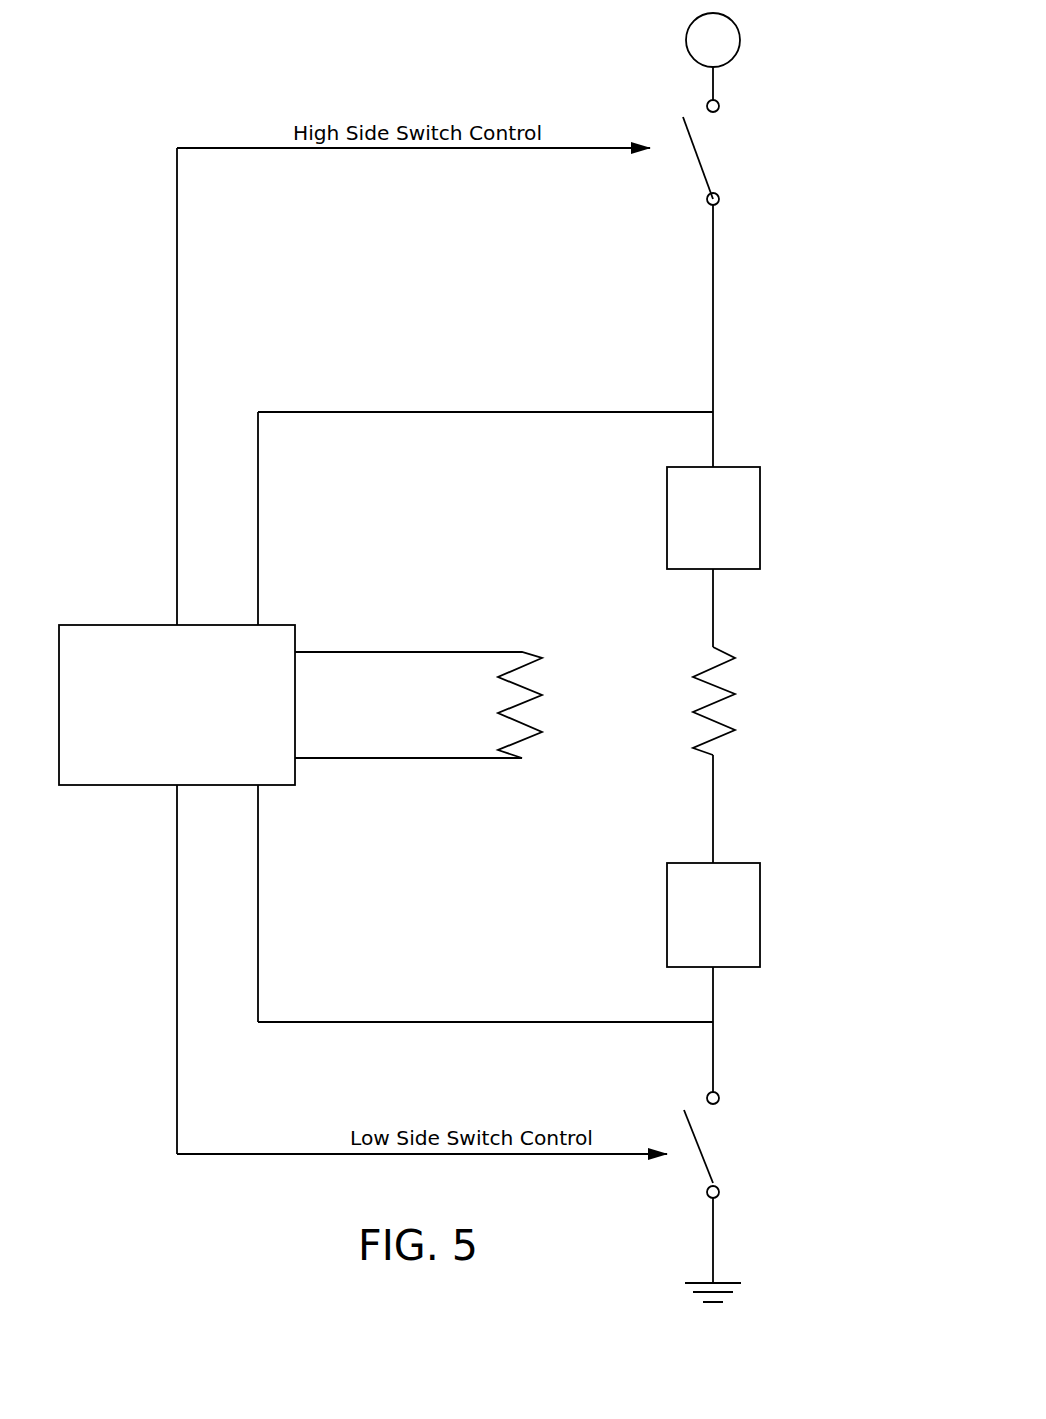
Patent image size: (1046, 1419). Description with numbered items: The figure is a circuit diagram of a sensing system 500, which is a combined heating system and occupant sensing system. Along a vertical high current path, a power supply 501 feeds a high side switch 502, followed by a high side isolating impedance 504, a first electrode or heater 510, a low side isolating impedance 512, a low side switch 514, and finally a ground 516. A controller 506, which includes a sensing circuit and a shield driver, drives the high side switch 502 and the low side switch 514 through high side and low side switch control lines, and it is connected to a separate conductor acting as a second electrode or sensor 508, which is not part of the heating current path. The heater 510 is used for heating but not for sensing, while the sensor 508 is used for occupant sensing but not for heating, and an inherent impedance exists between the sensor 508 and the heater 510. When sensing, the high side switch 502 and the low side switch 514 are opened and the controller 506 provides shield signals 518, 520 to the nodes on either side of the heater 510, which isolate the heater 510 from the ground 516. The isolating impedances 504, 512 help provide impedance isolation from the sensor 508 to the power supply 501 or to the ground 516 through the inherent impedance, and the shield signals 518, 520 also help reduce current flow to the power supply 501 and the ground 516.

The sensing system 500 is at (114, 88).
The power supply 501 is at (740, 38).
The high side switch 502 is at (758, 143).
The high side isolating impedance 504 is at (760, 514).
The controller 506 is at (283, 625).
The sensor 508 is at (582, 673).
The heater 510 is at (763, 672).
The low side isolating impedance 512 is at (760, 910).
The low side switch 514 is at (743, 1125).
The ground 516 is at (758, 1269).
The shield signal 518 is at (485, 398).
The shield signal 520 is at (485, 1008).